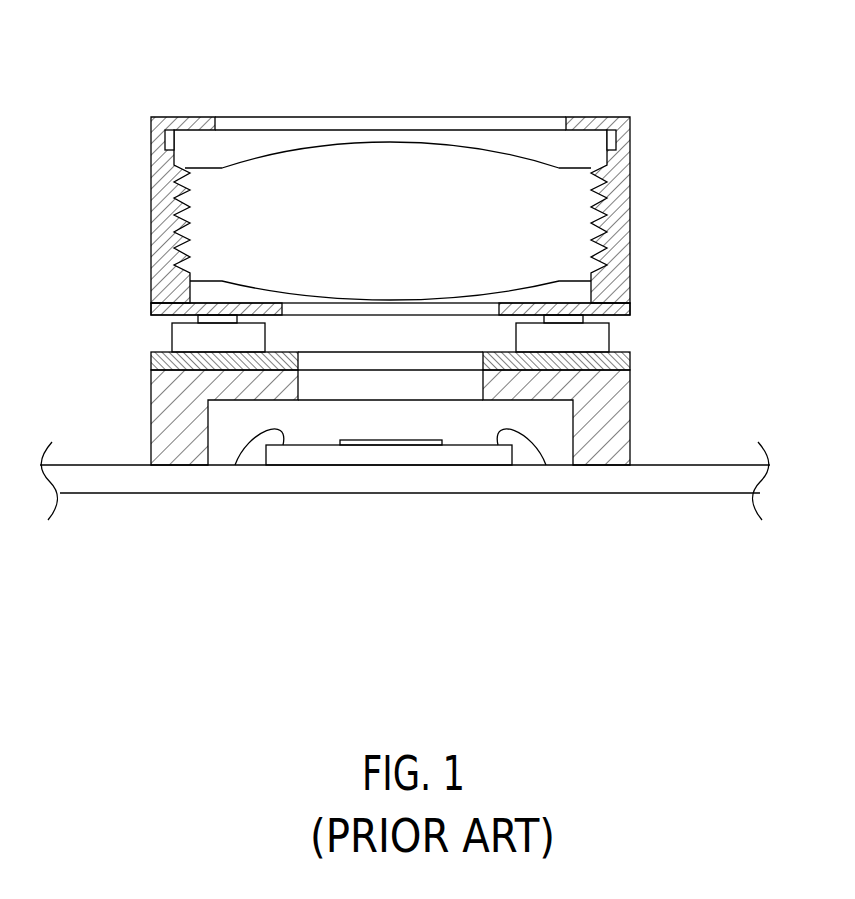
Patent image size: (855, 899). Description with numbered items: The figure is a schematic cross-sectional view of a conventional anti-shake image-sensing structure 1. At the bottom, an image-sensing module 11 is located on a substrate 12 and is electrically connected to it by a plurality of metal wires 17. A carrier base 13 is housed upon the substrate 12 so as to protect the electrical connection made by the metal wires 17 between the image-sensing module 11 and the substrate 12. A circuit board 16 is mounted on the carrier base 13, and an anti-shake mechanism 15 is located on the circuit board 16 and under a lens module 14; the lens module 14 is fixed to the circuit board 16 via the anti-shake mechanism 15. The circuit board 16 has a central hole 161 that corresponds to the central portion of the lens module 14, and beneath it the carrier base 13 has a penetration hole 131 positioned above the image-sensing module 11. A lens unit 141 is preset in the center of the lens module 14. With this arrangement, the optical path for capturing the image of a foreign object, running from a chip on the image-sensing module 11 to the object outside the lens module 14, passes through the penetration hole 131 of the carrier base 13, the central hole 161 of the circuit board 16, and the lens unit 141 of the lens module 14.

The anti-shake image-sensing structure 1 is at (692, 98).
The image-sensing module 11 is at (388, 460).
The substrate 12 is at (291, 483).
The carrier base 13 is at (617, 424).
The penetration hole 131 is at (310, 388).
The lens module 14 is at (623, 228).
The lens unit 141 is at (570, 202).
The anti-shake mechanism 15 is at (602, 333).
The circuit board 16 is at (628, 358).
The central hole 161 is at (325, 358).
The metal wires 17 is at (532, 462).